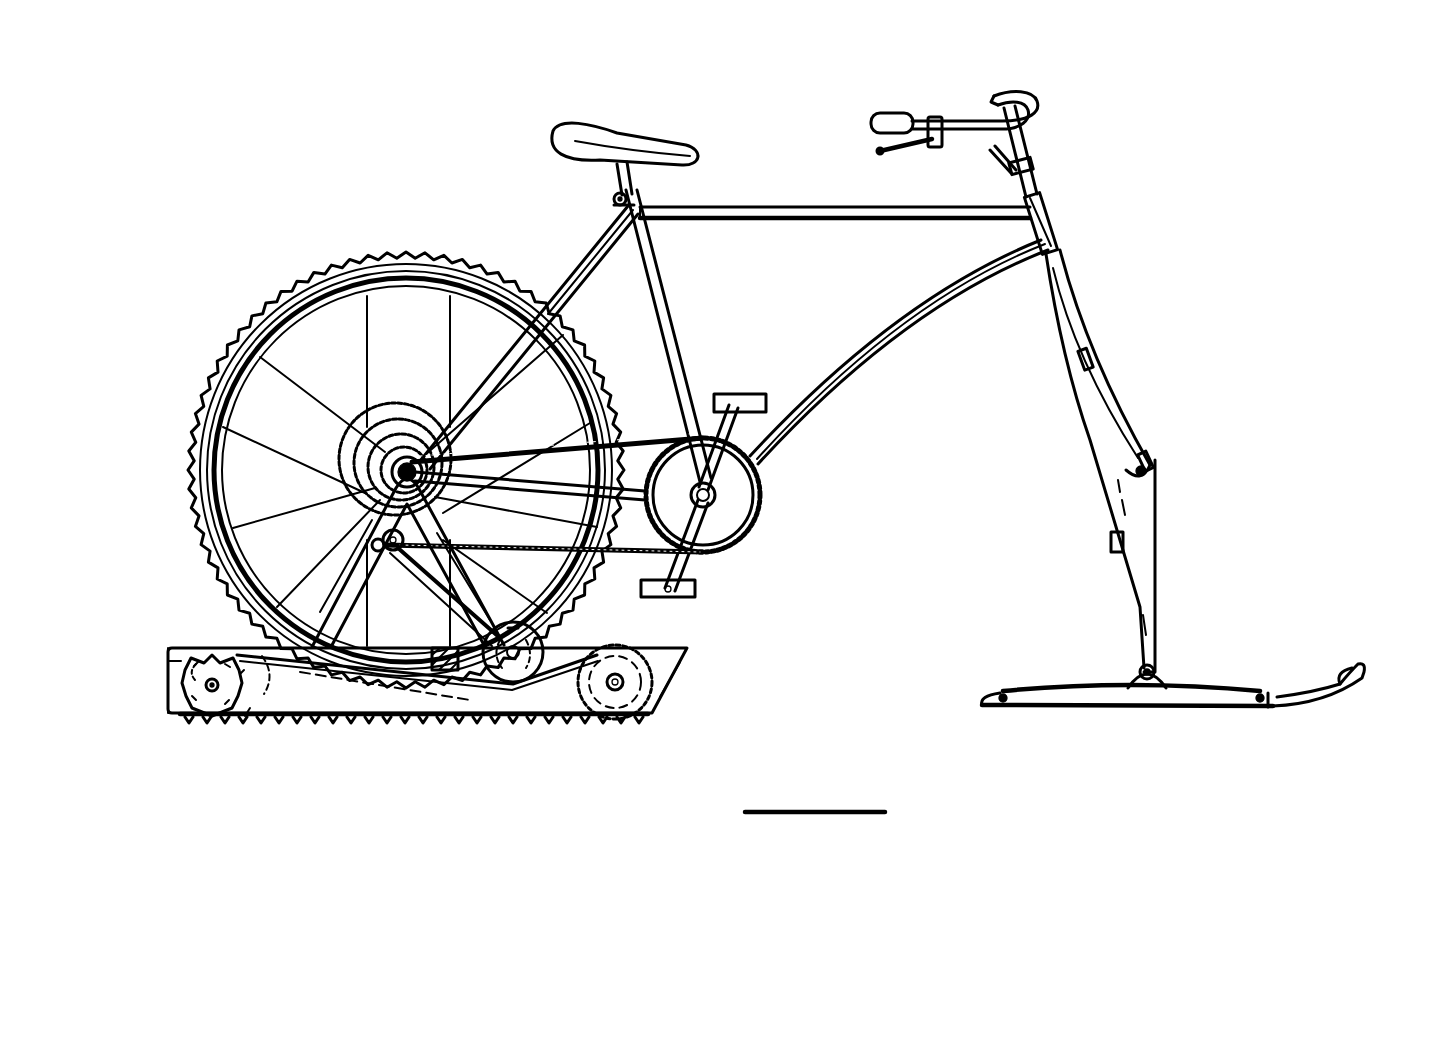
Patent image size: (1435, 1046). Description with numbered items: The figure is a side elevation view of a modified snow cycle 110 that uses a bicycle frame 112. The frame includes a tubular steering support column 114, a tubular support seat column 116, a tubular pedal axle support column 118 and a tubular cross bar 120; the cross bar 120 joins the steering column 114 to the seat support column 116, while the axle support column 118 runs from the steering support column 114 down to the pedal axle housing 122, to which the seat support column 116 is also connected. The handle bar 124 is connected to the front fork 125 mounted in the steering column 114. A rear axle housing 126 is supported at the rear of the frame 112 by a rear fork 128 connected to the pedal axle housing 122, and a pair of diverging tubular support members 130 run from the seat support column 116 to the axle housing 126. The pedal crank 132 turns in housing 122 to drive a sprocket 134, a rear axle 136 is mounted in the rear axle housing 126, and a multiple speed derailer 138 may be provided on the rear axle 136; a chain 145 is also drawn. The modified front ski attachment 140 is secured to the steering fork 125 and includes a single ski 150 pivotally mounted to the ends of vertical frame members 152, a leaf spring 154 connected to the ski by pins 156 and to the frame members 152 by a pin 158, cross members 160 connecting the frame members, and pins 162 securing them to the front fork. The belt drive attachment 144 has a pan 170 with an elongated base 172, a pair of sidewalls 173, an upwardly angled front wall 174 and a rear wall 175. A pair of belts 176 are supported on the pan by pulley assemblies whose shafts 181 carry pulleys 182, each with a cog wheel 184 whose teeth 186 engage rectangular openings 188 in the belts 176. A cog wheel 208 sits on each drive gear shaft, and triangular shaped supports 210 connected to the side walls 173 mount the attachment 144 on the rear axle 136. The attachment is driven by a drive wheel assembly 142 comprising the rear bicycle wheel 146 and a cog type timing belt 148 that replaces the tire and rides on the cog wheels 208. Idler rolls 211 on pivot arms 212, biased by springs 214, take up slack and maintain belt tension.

The modified snow cycle 110 is at (718, 95).
The bicycle frame 112 is at (713, 207).
The tubular steering support column 114 is at (1048, 215).
The tubular support seat column 116 is at (662, 282).
The tubular pedal axle support column 118 is at (925, 318).
The tubular cross bar 120 is at (935, 206).
The pedal axle housing 122 is at (745, 500).
The handle bar 124 is at (1028, 100).
The front fork 125 is at (1066, 277).
The rear axle housing 126 is at (372, 440).
The rear fork 128 is at (545, 514).
The diverging tubular support members 130 is at (615, 233).
The pedal crank 132 is at (692, 568).
The sprocket 134 is at (738, 522).
The rear axle 136 is at (372, 490).
The multiple speed derailer 138 is at (394, 551).
The front ski attachment 140 is at (1183, 509).
The drive wheel assembly 142 is at (285, 297).
The belt drive attachment 144 is at (624, 636).
The drive chain 145 is at (512, 450).
The rear bicycle wheel 146 is at (416, 298).
The cog type timing belt 148 is at (440, 258).
The single ski 150 is at (1342, 680).
The vertical frame members 152 is at (1160, 573).
The leaf spring 154 is at (1195, 688).
The pins 156 is at (1262, 692).
The pin 158 is at (1136, 666).
The cross members 160 is at (1135, 424).
The pins 162 is at (1098, 364).
The pan 170 is at (687, 661).
The elongated base 172 is at (172, 716).
The sidewalls 173 is at (430, 718).
The front wall 174 is at (655, 680).
The rear wall 175 is at (170, 656).
The belts 176 is at (370, 670).
The shaft 181 is at (180, 703).
The pulleys 182 is at (213, 716).
The cog wheel 184 is at (232, 706).
The teeth 186 is at (205, 708).
The rectangular openings 188 is at (302, 716).
The cog wheel 208 is at (233, 652).
The triangular shaped supports 210 is at (360, 546).
The idler rolls 211 is at (520, 622).
The pivot arm 212 is at (487, 672).
The springs 214 is at (445, 649).